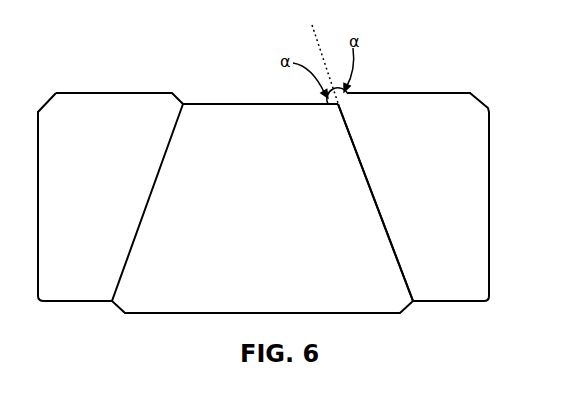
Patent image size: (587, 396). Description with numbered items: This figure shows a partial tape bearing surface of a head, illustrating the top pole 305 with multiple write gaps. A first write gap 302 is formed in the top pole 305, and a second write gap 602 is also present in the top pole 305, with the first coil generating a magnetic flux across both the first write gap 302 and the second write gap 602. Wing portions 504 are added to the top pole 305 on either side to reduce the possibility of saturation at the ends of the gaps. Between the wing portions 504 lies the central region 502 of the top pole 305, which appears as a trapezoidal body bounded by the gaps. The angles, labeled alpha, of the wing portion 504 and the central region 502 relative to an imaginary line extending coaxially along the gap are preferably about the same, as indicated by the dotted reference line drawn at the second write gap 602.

The first write gap 302 is at (173, 135).
The top pole 305 is at (225, 132).
The central region 502 is at (280, 275).
The wing portions 504 is at (448, 93).
The second write gap 602 is at (352, 138).